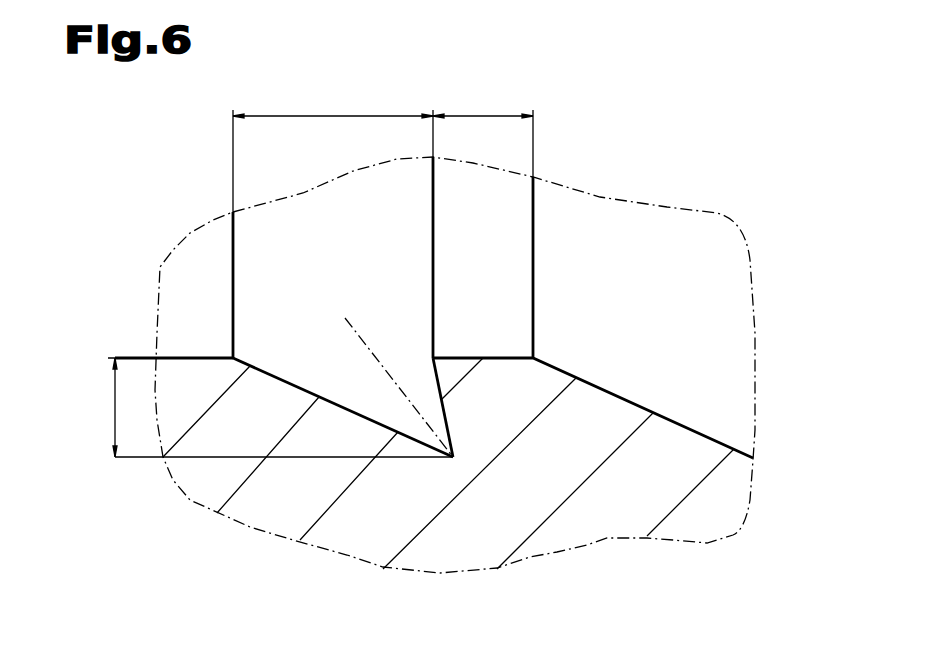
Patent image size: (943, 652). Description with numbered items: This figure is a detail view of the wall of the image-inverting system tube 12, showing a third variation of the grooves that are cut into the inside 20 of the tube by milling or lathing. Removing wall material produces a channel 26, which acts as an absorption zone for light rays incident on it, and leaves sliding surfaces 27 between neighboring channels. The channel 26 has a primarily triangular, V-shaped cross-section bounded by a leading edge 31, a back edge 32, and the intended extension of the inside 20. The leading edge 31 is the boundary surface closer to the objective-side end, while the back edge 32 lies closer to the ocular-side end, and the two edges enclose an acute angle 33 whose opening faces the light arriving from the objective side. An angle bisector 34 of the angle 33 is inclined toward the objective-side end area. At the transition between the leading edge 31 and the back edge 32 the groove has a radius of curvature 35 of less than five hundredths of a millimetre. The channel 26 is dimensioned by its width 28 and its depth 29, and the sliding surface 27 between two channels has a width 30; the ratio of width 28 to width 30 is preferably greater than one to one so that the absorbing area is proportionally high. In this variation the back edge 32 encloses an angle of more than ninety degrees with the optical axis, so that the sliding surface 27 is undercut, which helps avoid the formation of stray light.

The image-inverting system tube 12 is at (757, 540).
The inside 20 is at (172, 357).
The channel 26 is at (316, 333).
The sliding surface 27 is at (195, 353).
The width of the channel 28 is at (378, 114).
The depth of the channel 29 is at (113, 412).
The width of the sliding surface 30 is at (477, 114).
The leading edge 31 is at (319, 392).
The back edge 32 is at (432, 373).
The angle 33 is at (430, 388).
The angle bisector 34 is at (357, 333).
The radius of curvature 35 is at (451, 459).